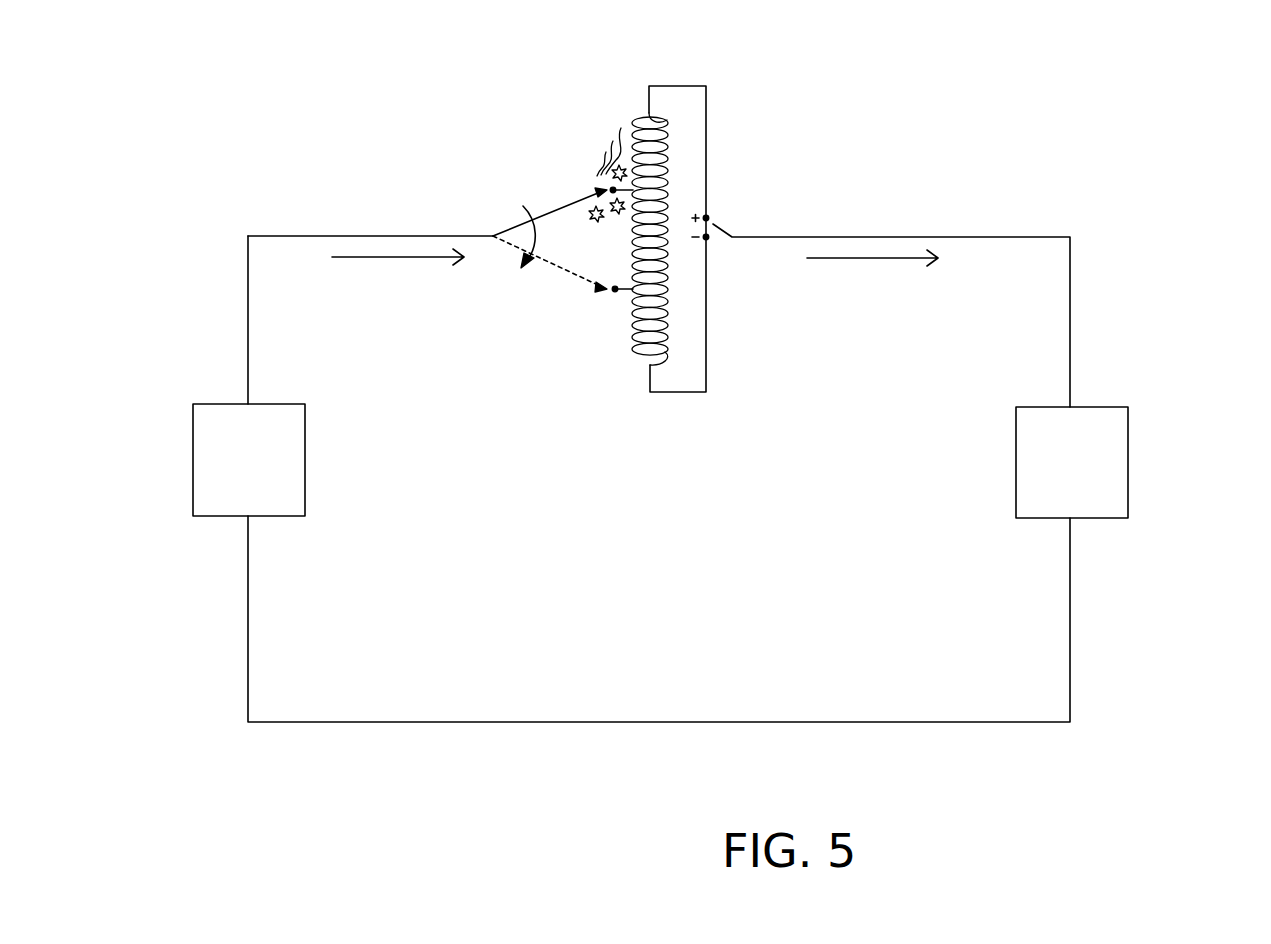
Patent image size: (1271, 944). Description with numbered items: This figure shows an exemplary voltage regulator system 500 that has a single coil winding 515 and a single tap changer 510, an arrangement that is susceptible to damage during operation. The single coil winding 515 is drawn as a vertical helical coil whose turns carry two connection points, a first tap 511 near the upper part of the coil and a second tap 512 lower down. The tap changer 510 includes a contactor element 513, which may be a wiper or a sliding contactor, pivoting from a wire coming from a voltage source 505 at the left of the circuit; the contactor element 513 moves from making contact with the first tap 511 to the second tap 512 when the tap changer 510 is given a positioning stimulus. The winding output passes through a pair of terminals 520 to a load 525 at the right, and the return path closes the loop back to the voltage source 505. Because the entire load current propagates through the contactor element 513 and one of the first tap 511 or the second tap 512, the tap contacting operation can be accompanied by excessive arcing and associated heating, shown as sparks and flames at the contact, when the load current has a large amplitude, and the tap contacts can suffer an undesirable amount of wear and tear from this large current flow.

The voltage regulator system 500 is at (1205, 137).
The voltage source 505 is at (298, 437).
The tap changer 510 is at (547, 233).
The first tap 511 is at (605, 188).
The second tap 512 is at (613, 290).
The contactor element 513 is at (568, 207).
The single coil winding 515 is at (685, 109).
The output terminals 520 is at (710, 222).
The load 525 is at (1121, 437).